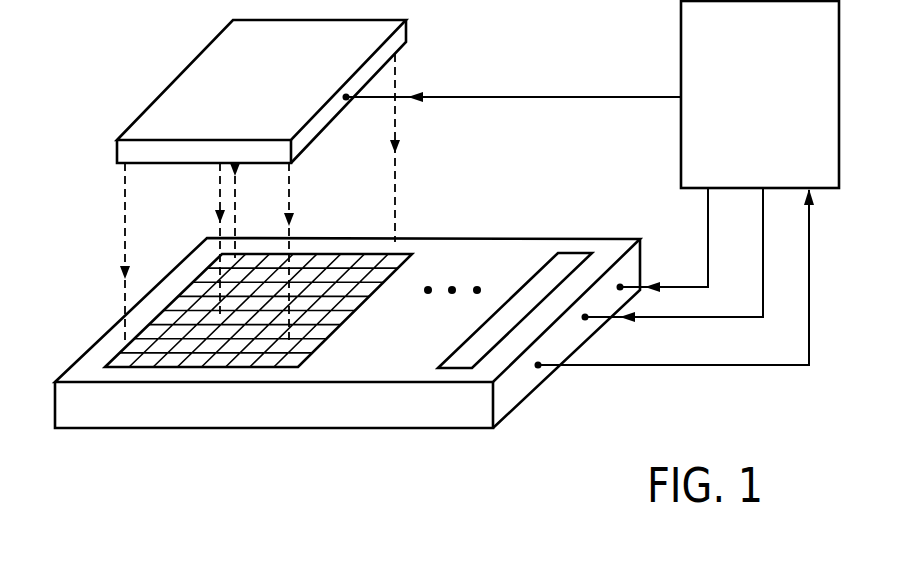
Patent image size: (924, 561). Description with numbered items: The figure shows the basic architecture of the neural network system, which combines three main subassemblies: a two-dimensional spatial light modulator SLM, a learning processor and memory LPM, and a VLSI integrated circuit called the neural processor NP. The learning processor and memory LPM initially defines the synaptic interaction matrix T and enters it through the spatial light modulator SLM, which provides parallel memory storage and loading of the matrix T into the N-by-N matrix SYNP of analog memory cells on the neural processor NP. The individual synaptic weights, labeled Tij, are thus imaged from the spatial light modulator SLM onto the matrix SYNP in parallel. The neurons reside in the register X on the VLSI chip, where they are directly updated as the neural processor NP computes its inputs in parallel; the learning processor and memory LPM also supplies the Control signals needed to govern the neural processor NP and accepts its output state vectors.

The spatial light modulator SLM is at (185, 97).
The interconnection weights T_ij (optical inputs) Tij is at (220, 198).
The matrix T is at (512, 86).
The learning processor and memory LPM is at (678, 80).
The neural processor NP is at (280, 410).
The matrix SYNP is at (190, 281).
The register X is at (560, 273).
The control signal Control is at (673, 255).